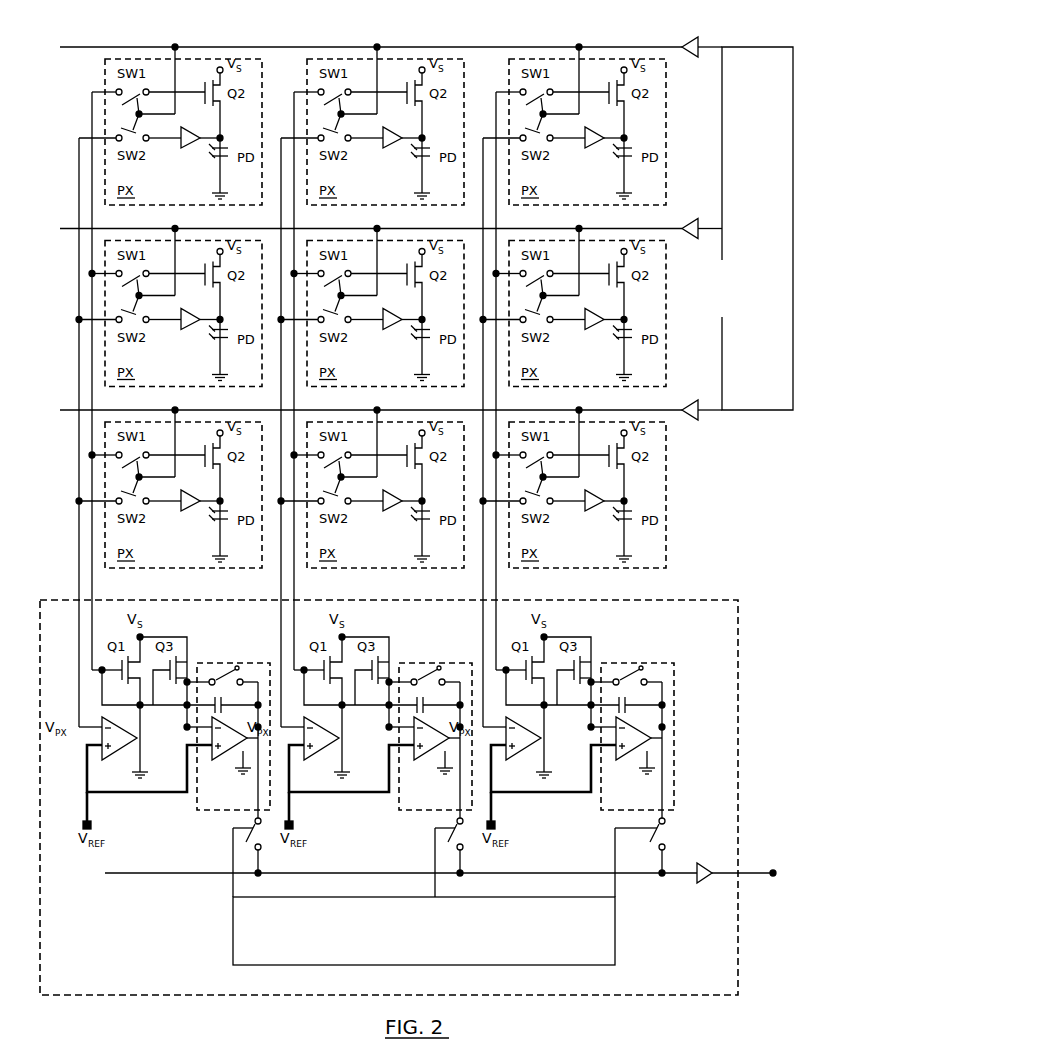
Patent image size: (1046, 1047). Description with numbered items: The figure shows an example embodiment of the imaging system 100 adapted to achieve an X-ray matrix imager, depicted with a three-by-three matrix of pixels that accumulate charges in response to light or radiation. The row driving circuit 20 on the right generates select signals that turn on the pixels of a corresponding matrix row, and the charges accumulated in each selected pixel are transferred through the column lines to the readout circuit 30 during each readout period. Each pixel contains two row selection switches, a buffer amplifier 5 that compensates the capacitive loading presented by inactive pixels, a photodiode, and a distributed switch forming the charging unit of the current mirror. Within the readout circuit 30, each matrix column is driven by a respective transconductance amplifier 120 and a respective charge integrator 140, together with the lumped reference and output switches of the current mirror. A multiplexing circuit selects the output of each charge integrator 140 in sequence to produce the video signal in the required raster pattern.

The imaging system 100 is at (772, 31).
The row driving circuit 20 is at (757, 228).
The readout circuit 30 is at (698, 979).
The buffer amplifier 5 is at (187, 145).
The transconductance amplifier 120 is at (146, 744).
The charge integrator 140 is at (237, 800).